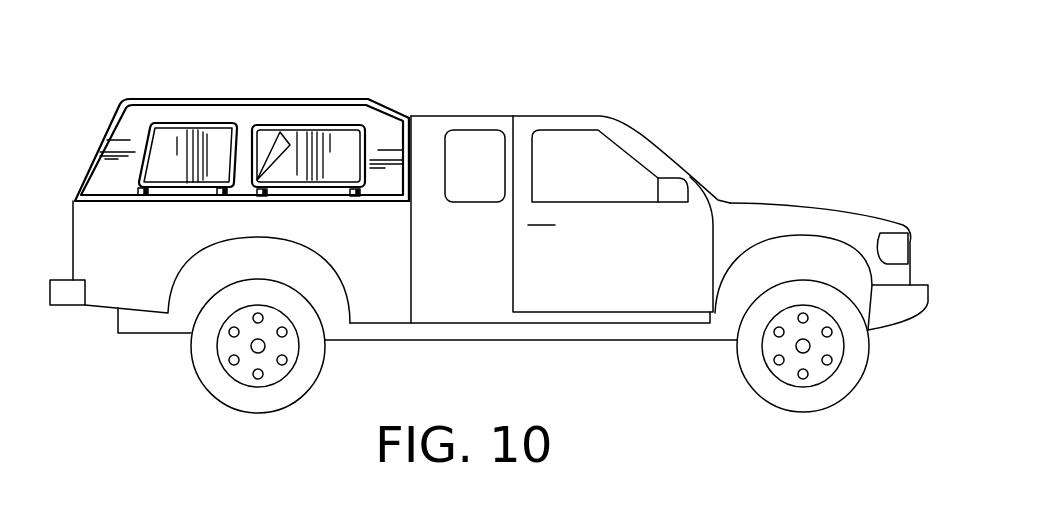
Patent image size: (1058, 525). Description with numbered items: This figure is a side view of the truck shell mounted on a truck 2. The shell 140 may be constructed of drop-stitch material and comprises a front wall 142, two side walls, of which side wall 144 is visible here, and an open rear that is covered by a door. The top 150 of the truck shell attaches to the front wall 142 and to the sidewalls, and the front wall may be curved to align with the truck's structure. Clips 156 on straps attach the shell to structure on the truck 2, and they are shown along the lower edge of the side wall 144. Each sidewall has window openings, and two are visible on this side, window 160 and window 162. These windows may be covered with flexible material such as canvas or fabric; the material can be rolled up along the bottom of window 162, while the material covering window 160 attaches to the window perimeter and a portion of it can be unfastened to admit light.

The truck 2 is at (772, 202).
The shell 140 is at (250, 121).
The front wall 142 is at (416, 130).
The side wall 144 is at (247, 120).
The top 150 is at (238, 102).
The clips 156 is at (143, 193).
The window 160 is at (337, 145).
The window 162 is at (158, 147).